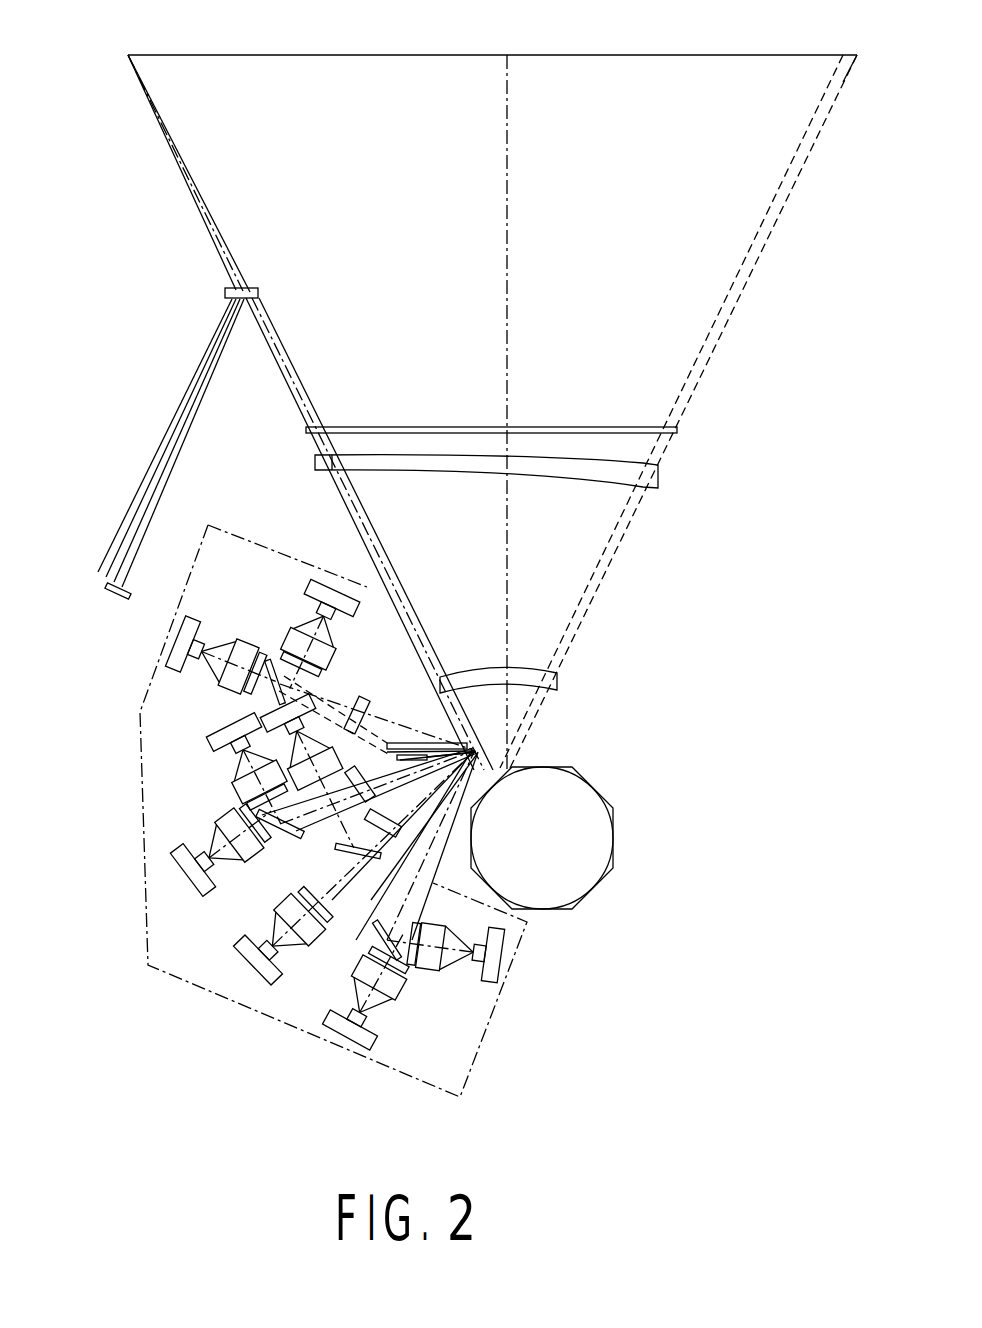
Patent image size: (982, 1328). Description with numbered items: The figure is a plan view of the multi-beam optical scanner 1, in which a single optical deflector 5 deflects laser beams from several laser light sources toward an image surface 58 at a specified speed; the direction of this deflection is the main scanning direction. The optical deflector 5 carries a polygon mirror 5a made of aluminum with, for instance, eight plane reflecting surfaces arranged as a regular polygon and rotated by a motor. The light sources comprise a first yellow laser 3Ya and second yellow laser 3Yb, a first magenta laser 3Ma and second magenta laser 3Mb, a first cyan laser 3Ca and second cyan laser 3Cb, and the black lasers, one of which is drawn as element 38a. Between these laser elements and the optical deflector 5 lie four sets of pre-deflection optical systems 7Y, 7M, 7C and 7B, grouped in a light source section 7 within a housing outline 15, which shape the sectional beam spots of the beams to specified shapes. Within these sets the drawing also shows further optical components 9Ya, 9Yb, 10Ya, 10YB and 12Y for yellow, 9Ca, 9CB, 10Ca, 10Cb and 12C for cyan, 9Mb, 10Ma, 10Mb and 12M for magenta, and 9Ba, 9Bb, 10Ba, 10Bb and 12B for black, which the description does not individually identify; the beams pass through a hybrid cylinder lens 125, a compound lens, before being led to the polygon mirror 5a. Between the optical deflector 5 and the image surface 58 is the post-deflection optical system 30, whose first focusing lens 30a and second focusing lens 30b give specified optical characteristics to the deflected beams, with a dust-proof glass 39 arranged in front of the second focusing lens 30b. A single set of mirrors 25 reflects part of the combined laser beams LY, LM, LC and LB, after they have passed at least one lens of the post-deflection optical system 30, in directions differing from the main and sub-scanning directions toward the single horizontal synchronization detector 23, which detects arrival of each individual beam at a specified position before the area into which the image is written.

The multi-beam optical scanner 1 is at (672, 589).
The optical deflector 5 is at (624, 797).
The polygon mirror 5a is at (603, 828).
The light source section 7 is at (160, 988).
The pre-deflection optical system 7Y is at (195, 604).
The pre-deflection optical system 7M is at (163, 845).
The pre-deflection optical system 7C is at (291, 955).
The pre-deflection optical system 7B is at (476, 1025).
The light source unit housing 15 is at (266, 542).
The horizontal synchronization detector 23 is at (106, 592).
The mirrors 25 is at (225, 293).
The post-deflection optical system 30 is at (585, 565).
The first focusing lens 30a is at (559, 686).
The second focusing lens 30b is at (660, 481).
The dust-proof glass 39 is at (600, 427).
The image surface 58 is at (573, 55).
The hybrid cylinder lens 125 is at (285, 680).
The first yellow laser 3Ya is at (175, 616).
The second yellow laser 3Yb is at (320, 578).
The yellow collimator lens a 9Ya is at (228, 676).
The yellow collimator lens b 9Yb is at (293, 625).
The yellow aperture a 10Ya is at (255, 665).
The yellow aperture b 10YB is at (305, 660).
The yellow beam combining element 12Y is at (262, 700).
The second cyan laser 3Cb is at (262, 722).
The first cyan laser 3Ca is at (236, 954).
The cyan collimator lens b 9CB is at (367, 703).
The cyan aperture b 10Cb is at (362, 776).
The cyan collimator lens a 9Ca is at (273, 930).
The cyan aperture a 10Ca is at (330, 910).
The cyan beam combining mirror 12C is at (380, 843).
The second magenta laser 3Mb is at (210, 740).
The first magenta laser 3Ma is at (172, 868).
The magenta collimator lens 9Mb is at (245, 785).
The magenta aperture b 10Mb is at (258, 802).
The magenta aperture a 10Ma is at (258, 848).
The magenta beam combining mirror 12M is at (287, 845).
The black semiconductor laser a 38a is at (333, 1047).
The black collimator lens a 9Ba is at (372, 995).
The black aperture a 10Ba is at (392, 990).
The black collimator lens b 9Bb is at (447, 970).
The black aperture b 10Bb is at (417, 962).
The black beam combining mirror 12B is at (403, 965).
The laser beam LB is at (108, 552).
The laser beam LC is at (118, 530).
The laser beam LM is at (152, 528).
The laser beam LY is at (131, 575).